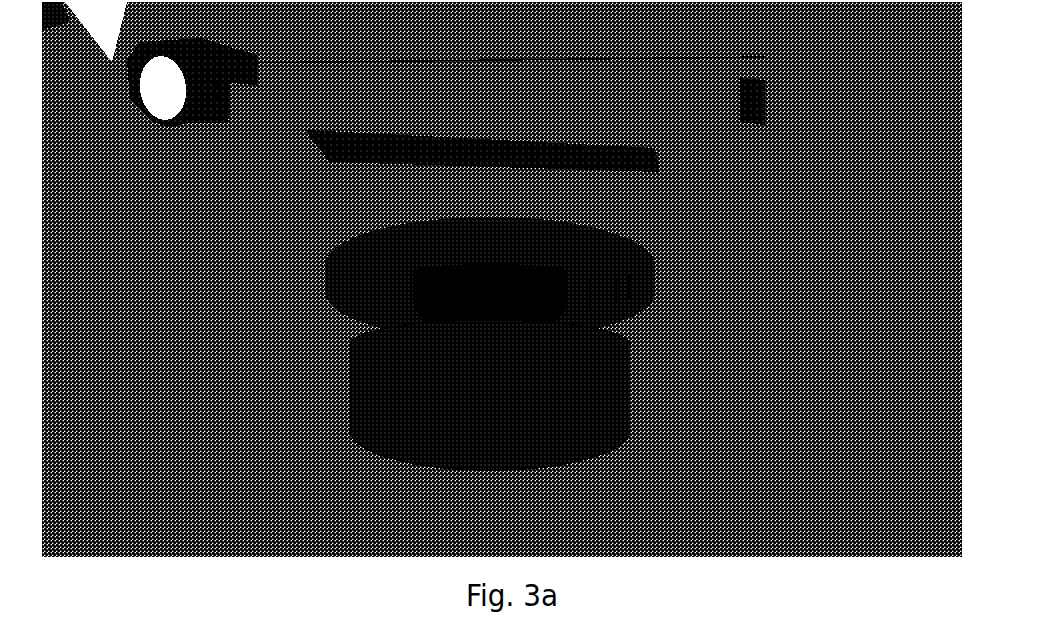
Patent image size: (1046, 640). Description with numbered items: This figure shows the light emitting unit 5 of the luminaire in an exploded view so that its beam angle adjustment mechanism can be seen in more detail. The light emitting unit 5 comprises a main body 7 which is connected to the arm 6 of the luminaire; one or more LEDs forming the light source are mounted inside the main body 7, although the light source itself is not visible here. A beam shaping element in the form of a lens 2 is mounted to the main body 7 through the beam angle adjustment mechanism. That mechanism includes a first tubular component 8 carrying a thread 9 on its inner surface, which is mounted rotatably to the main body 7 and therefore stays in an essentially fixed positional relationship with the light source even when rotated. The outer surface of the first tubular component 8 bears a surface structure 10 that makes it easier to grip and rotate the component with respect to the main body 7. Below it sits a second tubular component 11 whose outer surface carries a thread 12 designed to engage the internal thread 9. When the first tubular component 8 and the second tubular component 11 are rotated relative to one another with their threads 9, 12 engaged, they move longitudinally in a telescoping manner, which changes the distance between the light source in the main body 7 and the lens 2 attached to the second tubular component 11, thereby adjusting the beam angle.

The lens 2 is at (583, 480).
The light emitting unit 5 is at (766, 51).
The arm 6 is at (112, 63).
The main body 7 is at (766, 87).
The first tubular component 8 is at (660, 292).
The thread 9 is at (630, 232).
The surface structure 10 is at (330, 298).
The second tubular component 11 is at (350, 357).
The thread 12 is at (353, 405).